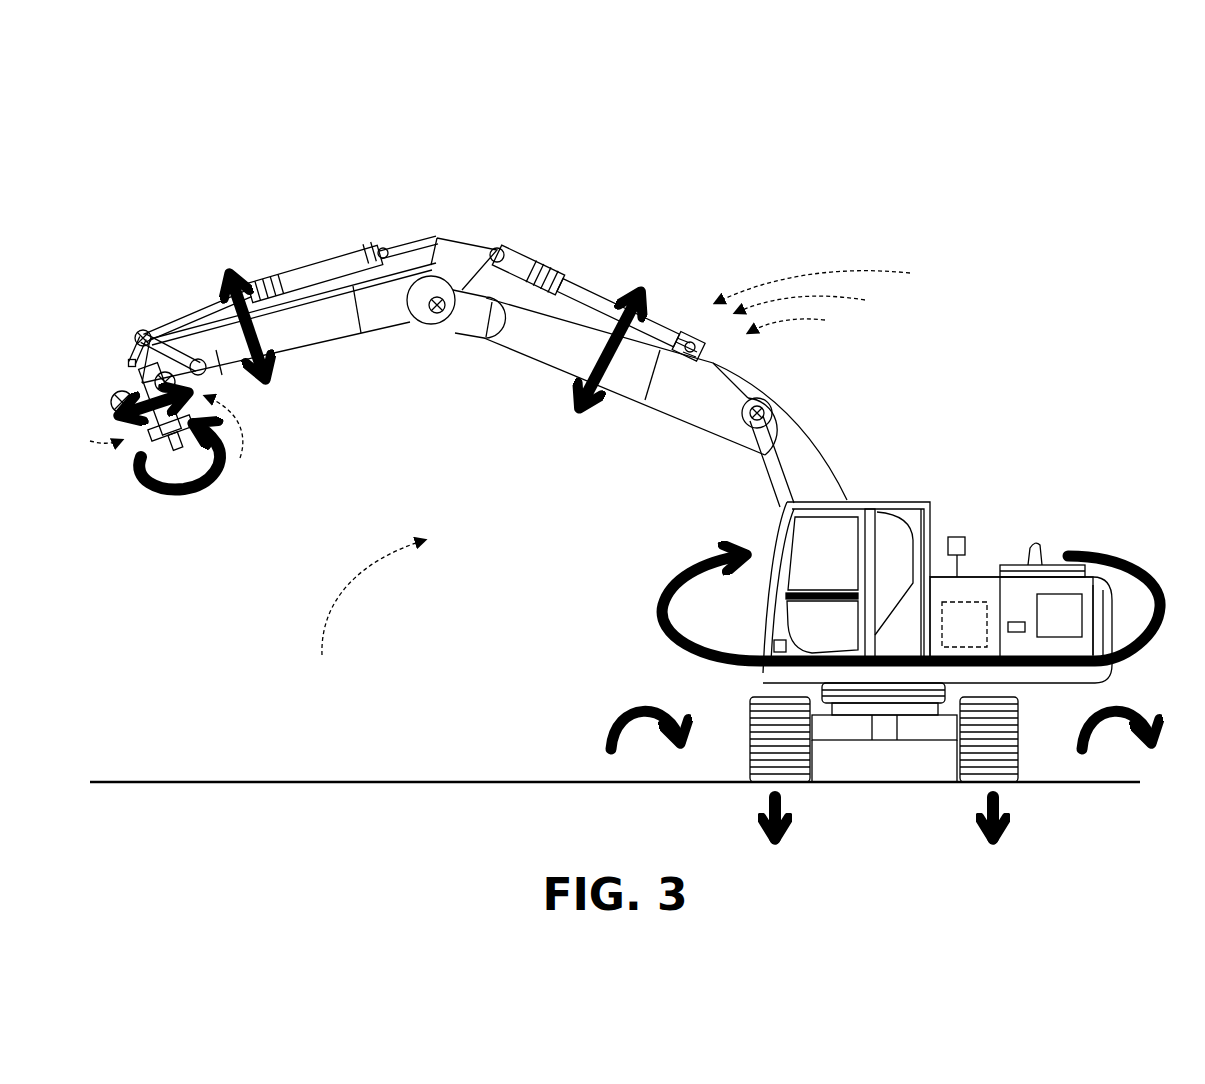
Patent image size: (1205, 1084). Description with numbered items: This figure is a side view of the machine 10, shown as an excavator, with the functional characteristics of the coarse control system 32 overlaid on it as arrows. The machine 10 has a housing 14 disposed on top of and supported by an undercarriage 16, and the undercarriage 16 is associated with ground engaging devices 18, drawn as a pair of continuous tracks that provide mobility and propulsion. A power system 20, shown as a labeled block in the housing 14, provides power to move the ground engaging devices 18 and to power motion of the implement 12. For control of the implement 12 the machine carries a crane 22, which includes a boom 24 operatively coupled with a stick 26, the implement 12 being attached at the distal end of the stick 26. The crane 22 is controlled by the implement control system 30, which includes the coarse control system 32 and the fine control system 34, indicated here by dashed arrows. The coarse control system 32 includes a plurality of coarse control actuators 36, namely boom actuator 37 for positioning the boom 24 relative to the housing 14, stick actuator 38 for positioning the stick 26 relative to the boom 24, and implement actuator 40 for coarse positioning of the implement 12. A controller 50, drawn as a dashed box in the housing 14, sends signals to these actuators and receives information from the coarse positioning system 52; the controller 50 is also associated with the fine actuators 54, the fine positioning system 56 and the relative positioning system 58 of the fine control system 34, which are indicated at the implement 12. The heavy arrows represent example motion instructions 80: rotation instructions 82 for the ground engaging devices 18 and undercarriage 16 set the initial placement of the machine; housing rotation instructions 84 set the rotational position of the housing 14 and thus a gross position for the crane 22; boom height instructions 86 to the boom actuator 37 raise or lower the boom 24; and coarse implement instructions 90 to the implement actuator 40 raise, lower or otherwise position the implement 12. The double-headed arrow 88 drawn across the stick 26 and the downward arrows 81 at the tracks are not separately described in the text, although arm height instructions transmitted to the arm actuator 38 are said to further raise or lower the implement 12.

The machine 10 is at (962, 156).
The implement 12 is at (118, 395).
The housing 14 is at (930, 500).
The undercarriage 16 is at (878, 742).
The ground engaging devices 18 is at (753, 703).
The power system 20 is at (1048, 624).
The crane 22 is at (442, 332).
The boom 24 is at (622, 393).
The stick 26 is at (310, 350).
The implement control system 30 is at (825, 282).
The coarse control system 32 is at (814, 300).
The fine control system 34 is at (229, 439).
The coarse control actuators 36 is at (800, 320).
The boom actuator 37 is at (765, 465).
The stick actuator 38 is at (593, 287).
The implement actuator 40 is at (317, 270).
The controller 50 is at (953, 636).
The coarse positioning system 52 is at (964, 535).
The fine actuators 54 is at (91, 430).
The fine positioning system 56 is at (126, 360).
The relative positioning system 58 is at (160, 453).
The motion instructions 80 is at (365, 608).
The downward force arrows 81 is at (770, 808).
The rotation instructions 82 is at (618, 717).
The housing rotation instructions 84 is at (664, 610).
The boom height instructions 86 is at (565, 392).
The boom movement arrow 88 is at (240, 320).
The coarse implement instructions 90 is at (118, 408).